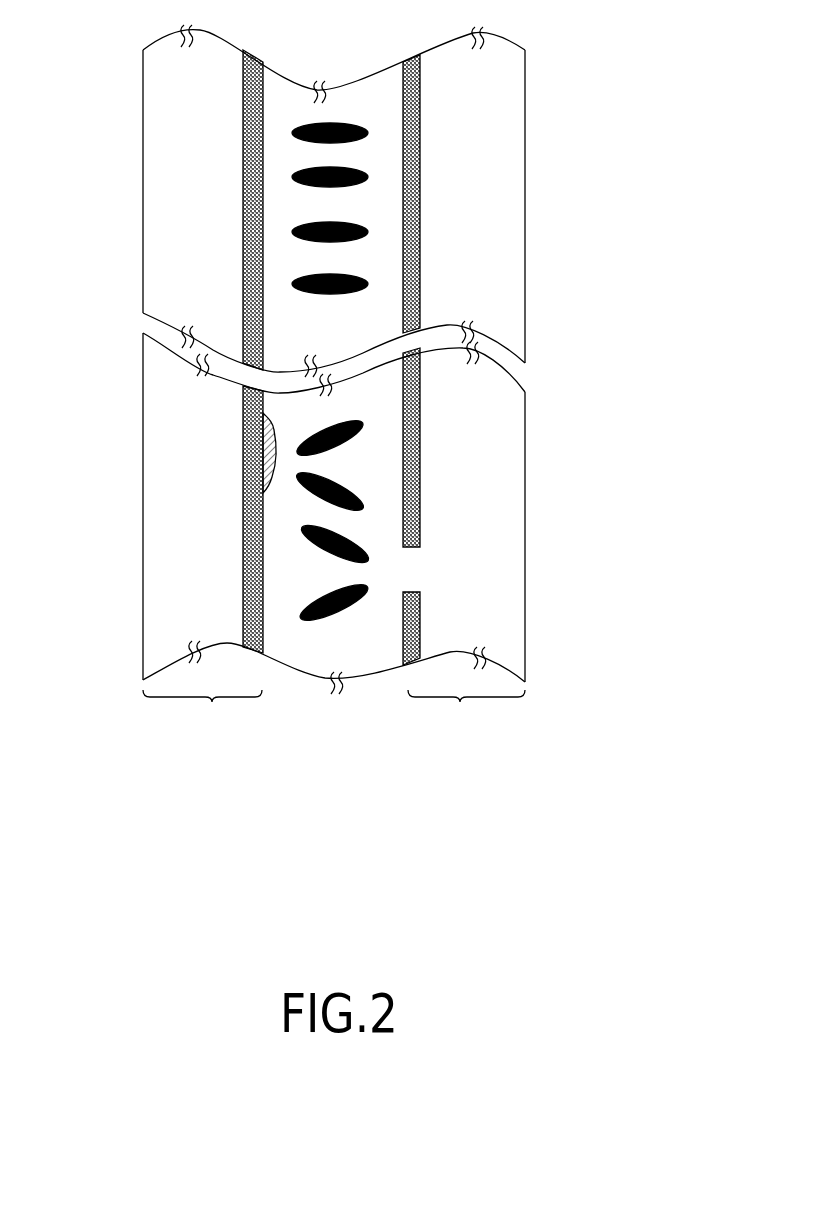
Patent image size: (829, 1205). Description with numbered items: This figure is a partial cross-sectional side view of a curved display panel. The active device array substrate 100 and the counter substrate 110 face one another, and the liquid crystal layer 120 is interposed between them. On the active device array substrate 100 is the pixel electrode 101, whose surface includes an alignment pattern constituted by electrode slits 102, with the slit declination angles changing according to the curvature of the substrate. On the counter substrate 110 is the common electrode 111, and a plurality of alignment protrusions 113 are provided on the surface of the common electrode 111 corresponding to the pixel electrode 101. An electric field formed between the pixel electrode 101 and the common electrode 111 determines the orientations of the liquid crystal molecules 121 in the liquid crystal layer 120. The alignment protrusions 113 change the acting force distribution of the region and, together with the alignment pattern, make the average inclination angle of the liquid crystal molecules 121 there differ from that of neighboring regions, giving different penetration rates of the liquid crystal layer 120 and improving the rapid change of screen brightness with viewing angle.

The active device array substrate 100 is at (466, 396).
The pixel electrode 101 is at (420, 518).
The electrode slits 102 is at (413, 593).
The counter substrate 110 is at (202, 396).
The common electrode 111 is at (243, 515).
The alignment protrusions 113 is at (243, 446).
The liquid crystal layer 120 is at (315, 650).
The liquid crystal molecules 121 is at (348, 125).